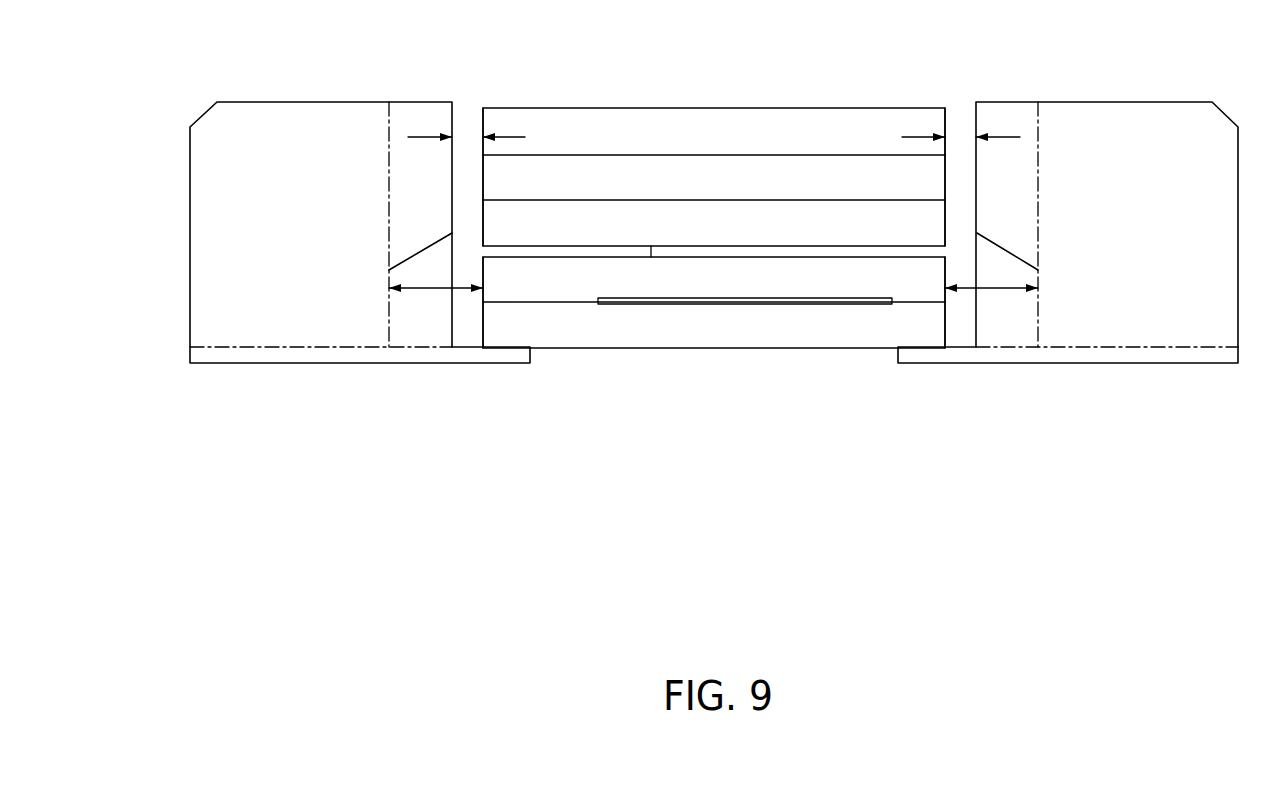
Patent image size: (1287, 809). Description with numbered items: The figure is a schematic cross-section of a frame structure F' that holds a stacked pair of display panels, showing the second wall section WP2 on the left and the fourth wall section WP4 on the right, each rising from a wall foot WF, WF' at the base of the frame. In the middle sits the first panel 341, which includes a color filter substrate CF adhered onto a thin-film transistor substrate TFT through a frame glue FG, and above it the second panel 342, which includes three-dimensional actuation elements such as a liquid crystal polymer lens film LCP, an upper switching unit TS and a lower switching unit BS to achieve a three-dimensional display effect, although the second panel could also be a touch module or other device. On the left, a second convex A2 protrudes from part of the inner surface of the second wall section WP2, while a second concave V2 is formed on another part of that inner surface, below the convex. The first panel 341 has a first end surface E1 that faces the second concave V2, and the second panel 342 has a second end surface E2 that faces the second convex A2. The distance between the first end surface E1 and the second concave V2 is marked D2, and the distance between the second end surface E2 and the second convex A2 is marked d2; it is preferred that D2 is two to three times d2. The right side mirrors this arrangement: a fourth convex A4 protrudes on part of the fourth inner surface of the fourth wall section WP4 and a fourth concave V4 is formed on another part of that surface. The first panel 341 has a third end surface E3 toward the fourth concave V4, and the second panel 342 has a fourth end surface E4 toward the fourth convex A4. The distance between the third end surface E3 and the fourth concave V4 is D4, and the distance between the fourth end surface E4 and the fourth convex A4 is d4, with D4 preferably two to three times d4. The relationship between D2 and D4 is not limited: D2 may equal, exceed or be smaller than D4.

The wall foot WF is at (341, 260).
The wall foot WF' is at (1087, 260).
The second wall section WP2 is at (313, 244).
The fourth wall section WP4 is at (1170, 244).
The frame structure F' is at (710, 245).
The second convex A2 is at (443, 199).
The fourth convex A4 is at (1023, 199).
The distance between first end surface and second concave D2 is at (438, 288).
The distance between third end surface and fourth concave D4 is at (990, 288).
The second concave V2 is at (437, 331).
The fourth concave V4 is at (1028, 331).
The distance between second end surface and second convex d2 is at (465, 137).
The distance between fourth end surface and fourth convex d4 is at (960, 137).
The second panel 342 is at (690, 223).
The first panel 341 is at (782, 278).
The liquid crystal polymer lens film LCP is at (748, 152).
The upper switching unit TS is at (740, 198).
The lower switching unit BS is at (740, 238).
The color filter substrate CF is at (740, 294).
The thin-film transistor substrate TFT is at (750, 341).
The frame glue FG is at (645, 304).
The first end surface E1 is at (480, 327).
The second end surface E2 is at (477, 130).
The third end surface E3 is at (947, 330).
The fourth end surface E4 is at (953, 120).